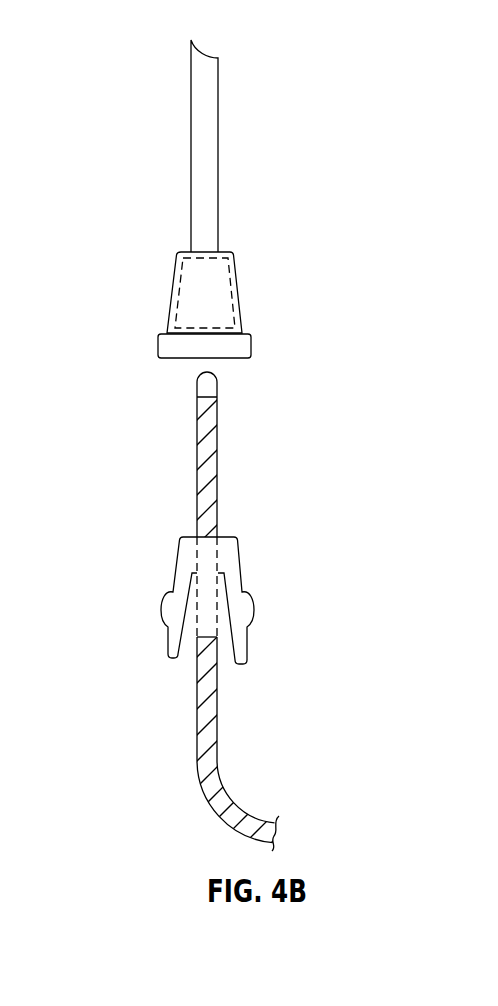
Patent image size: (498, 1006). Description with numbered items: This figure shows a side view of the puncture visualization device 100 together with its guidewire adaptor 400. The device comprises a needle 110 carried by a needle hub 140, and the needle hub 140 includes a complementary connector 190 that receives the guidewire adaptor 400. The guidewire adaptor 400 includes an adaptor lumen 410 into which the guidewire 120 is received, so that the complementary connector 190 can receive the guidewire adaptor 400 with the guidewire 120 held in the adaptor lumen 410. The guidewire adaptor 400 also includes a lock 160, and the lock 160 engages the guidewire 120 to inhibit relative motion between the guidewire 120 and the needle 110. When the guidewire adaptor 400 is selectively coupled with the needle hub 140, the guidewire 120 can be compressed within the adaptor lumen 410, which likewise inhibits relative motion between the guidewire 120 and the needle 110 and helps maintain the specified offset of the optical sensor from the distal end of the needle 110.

The puncture visualization device 100 is at (124, 48).
The needle 110 is at (204, 198).
The complementary connector 190 is at (168, 286).
The needle hub 140 is at (170, 342).
The guidewire 120 is at (212, 698).
The guidewire adaptor 400 is at (228, 567).
The adaptor lumen 410 is at (216, 553).
The lock 160 is at (191, 650).